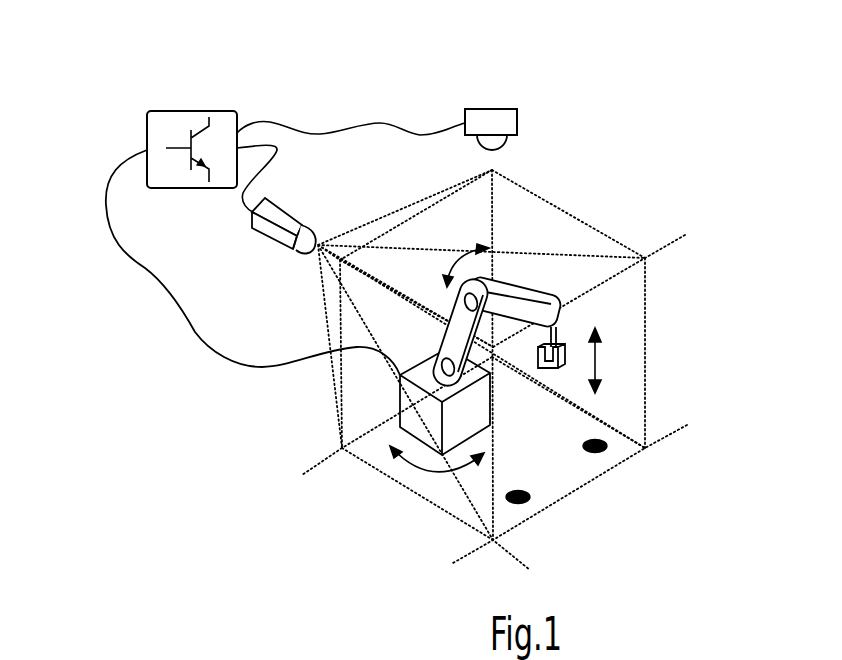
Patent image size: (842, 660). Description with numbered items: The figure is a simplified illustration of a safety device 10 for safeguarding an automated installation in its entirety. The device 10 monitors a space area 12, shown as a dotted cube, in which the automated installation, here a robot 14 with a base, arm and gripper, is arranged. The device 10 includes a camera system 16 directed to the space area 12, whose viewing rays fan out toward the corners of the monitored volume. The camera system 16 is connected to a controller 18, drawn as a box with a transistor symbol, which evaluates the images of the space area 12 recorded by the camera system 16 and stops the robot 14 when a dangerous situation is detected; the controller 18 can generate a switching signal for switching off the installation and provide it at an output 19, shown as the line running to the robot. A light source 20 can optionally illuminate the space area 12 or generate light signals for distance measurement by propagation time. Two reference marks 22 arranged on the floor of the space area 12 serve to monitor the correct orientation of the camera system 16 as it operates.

The device for safeguarding an automated installation 10 is at (170, 311).
The space area 12 is at (553, 203).
The robot 14 is at (530, 293).
The camera system 16 is at (272, 230).
The controller 18 is at (185, 111).
The output 19 is at (147, 151).
The light source 20 is at (493, 109).
The reference marks 22 is at (608, 446).